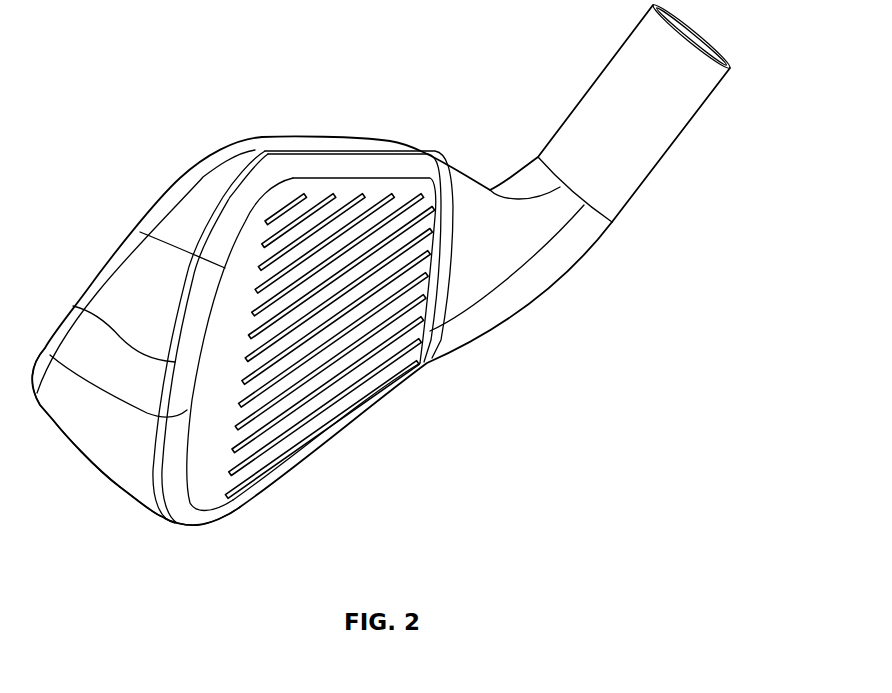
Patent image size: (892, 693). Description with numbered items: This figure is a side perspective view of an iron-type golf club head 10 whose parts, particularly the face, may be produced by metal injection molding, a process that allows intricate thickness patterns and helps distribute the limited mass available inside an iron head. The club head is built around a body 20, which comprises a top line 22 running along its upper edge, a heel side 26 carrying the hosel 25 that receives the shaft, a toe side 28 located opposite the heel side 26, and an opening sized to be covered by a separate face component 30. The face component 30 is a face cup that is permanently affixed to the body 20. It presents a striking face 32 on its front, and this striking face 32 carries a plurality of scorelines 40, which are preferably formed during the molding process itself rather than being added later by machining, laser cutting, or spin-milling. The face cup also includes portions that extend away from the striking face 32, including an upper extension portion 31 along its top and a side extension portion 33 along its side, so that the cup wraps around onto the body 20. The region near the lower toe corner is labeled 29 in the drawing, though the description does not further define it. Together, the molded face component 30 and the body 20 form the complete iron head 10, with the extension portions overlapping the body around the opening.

The iron-type golf club head 10 is at (158, 52).
The body 20 is at (222, 147).
The top line 22 is at (347, 142).
The hosel 25 is at (686, 125).
The heel side 26 is at (548, 293).
The toe side 28 is at (128, 268).
The toe 29 is at (77, 457).
The face component 30 is at (180, 504).
The upper extension portion 31 is at (403, 158).
The striking face 32 is at (307, 442).
The side extension portion 33 is at (73, 306).
The scorelines 40 is at (403, 363).